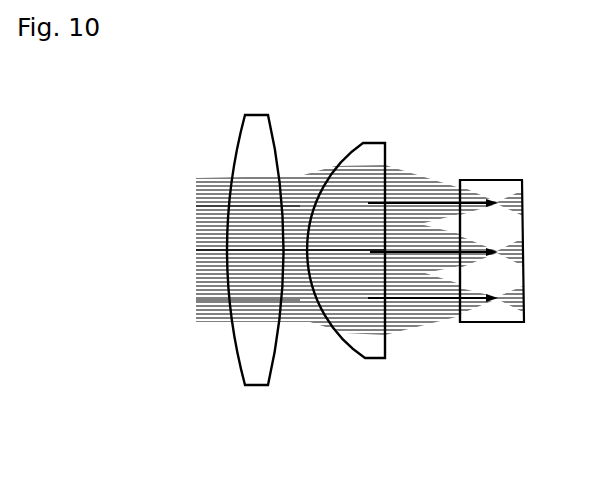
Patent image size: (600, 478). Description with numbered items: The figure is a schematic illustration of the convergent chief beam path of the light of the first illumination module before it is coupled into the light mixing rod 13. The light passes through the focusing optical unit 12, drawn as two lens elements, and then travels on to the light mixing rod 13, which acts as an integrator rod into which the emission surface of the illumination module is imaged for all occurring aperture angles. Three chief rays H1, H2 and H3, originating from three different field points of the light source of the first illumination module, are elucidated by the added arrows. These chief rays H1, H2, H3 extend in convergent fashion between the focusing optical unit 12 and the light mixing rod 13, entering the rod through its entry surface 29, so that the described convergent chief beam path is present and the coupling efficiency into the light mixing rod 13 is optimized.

The focusing optical unit 12 is at (382, 390).
The light mixing rod 13 is at (508, 324).
The entry surface 29 is at (449, 182).
The chief ray H1 is at (427, 257).
The chief ray H2 is at (418, 197).
The chief ray H3 is at (452, 302).